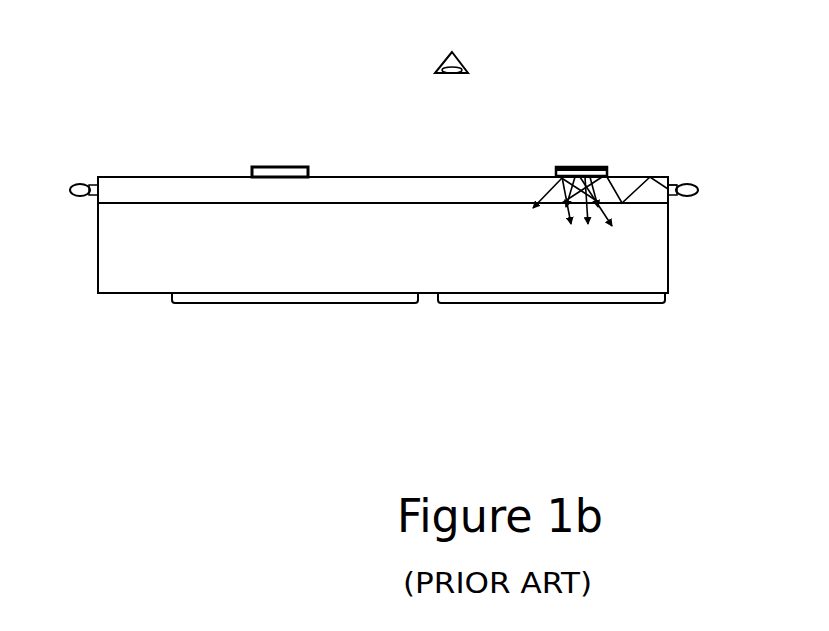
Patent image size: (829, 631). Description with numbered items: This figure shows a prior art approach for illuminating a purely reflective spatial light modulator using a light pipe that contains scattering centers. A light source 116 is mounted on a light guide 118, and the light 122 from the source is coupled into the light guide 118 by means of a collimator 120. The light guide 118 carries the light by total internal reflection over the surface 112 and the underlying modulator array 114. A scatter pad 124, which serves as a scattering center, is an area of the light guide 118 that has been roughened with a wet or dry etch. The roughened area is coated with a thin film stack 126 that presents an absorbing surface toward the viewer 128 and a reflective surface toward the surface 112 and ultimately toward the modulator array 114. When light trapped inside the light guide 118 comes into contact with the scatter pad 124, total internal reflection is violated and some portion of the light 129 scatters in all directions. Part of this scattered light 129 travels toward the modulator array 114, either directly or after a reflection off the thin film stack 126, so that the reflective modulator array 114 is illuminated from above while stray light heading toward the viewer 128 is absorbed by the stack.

The surface 112 is at (657, 268).
The modulator array 114 is at (637, 303).
The light source 116 is at (73, 183).
The light guide 118 is at (203, 187).
The collimator 120 is at (677, 183).
The light 122 is at (614, 190).
The scatter pad 124 is at (558, 168).
The thin film stack 126 is at (582, 167).
The viewer 128 is at (442, 53).
The light 129 is at (539, 205).